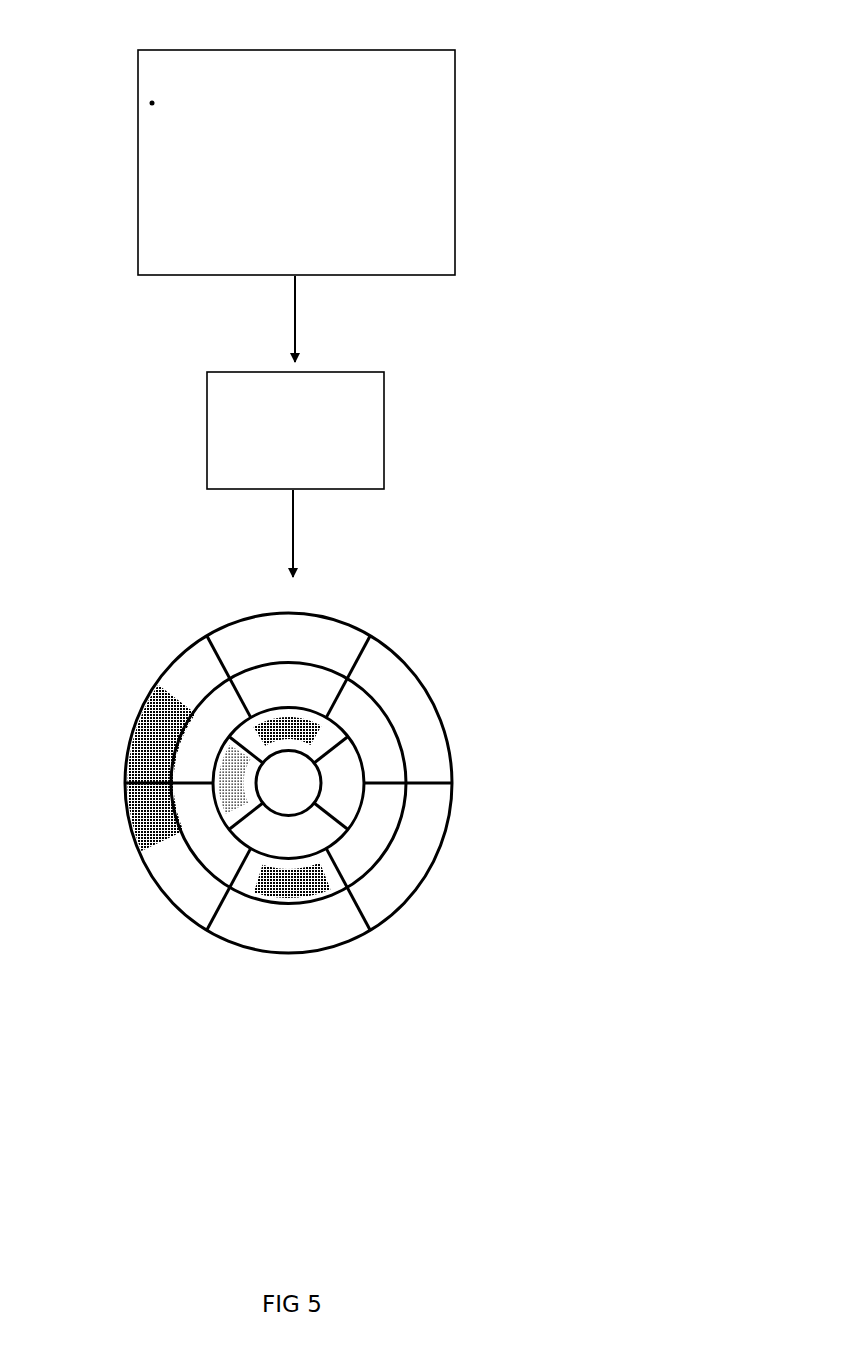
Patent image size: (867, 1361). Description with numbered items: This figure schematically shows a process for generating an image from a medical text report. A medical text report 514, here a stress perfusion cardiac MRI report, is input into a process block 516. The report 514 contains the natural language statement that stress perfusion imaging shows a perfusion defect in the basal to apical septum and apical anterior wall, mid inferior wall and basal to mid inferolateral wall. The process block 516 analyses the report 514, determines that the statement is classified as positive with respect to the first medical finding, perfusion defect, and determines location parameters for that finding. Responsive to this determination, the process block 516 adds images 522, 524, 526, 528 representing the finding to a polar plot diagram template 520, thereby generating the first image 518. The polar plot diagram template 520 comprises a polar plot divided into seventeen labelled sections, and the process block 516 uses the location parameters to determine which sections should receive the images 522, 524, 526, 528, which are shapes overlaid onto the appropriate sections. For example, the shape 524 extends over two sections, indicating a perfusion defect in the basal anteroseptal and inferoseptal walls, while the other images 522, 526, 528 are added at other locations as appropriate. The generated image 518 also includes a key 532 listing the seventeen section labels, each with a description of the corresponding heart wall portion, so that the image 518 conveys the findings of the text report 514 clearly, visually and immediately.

The medical text report 514 is at (455, 50).
The process block 516 is at (295, 430).
The first image 518 is at (309, 771).
The polar plot diagram template 520 is at (453, 818).
The image representing the first medical finding 522 is at (222, 793).
The shape 524 is at (163, 715).
The image representing the first medical finding 526 is at (268, 725).
The image representing the first medical finding 528 is at (320, 890).
The key 532 is at (556, 1075).